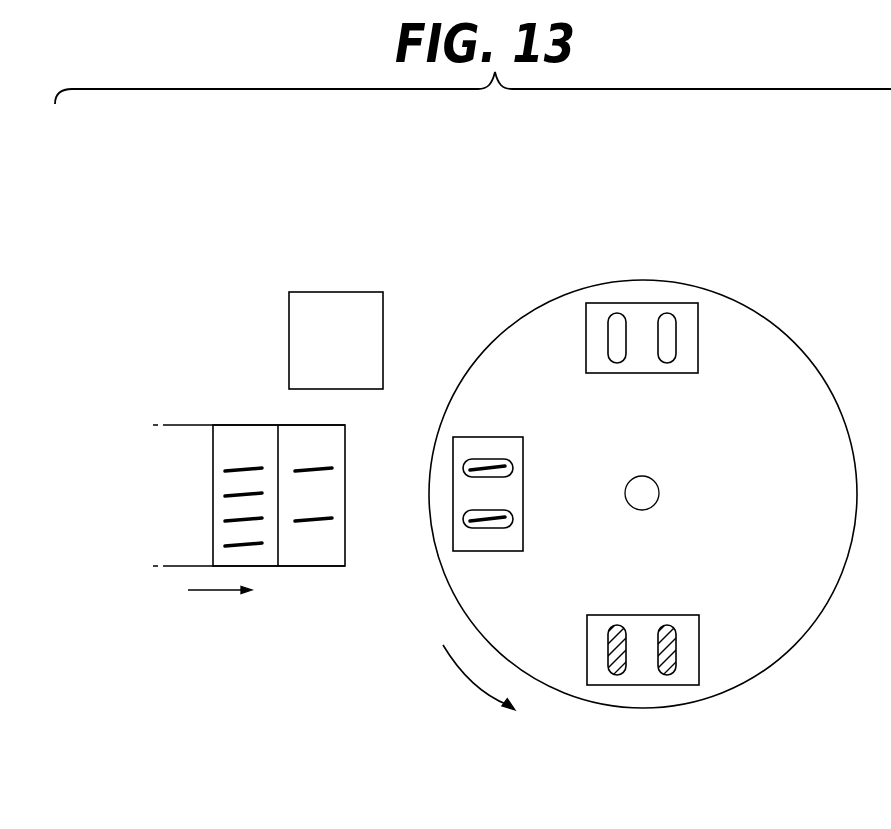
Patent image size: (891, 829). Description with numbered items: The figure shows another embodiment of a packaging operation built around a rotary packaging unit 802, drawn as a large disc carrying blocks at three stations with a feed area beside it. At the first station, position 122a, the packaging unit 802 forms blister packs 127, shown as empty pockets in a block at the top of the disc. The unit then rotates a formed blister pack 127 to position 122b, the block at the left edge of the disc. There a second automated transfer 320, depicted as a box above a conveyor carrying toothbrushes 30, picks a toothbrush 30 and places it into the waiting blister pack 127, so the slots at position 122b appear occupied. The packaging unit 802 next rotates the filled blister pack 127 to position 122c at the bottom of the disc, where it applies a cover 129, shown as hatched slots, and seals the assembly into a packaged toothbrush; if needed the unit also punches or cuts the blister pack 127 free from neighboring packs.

The packaging unit 802 is at (782, 235).
The second automated transfer 320 is at (300, 320).
The toothbrush 30 is at (312, 469).
The position 122a is at (653, 380).
The position 122b is at (448, 501).
The position 122c is at (641, 690).
The blister pack 127 is at (665, 316).
The cover 129 is at (668, 627).